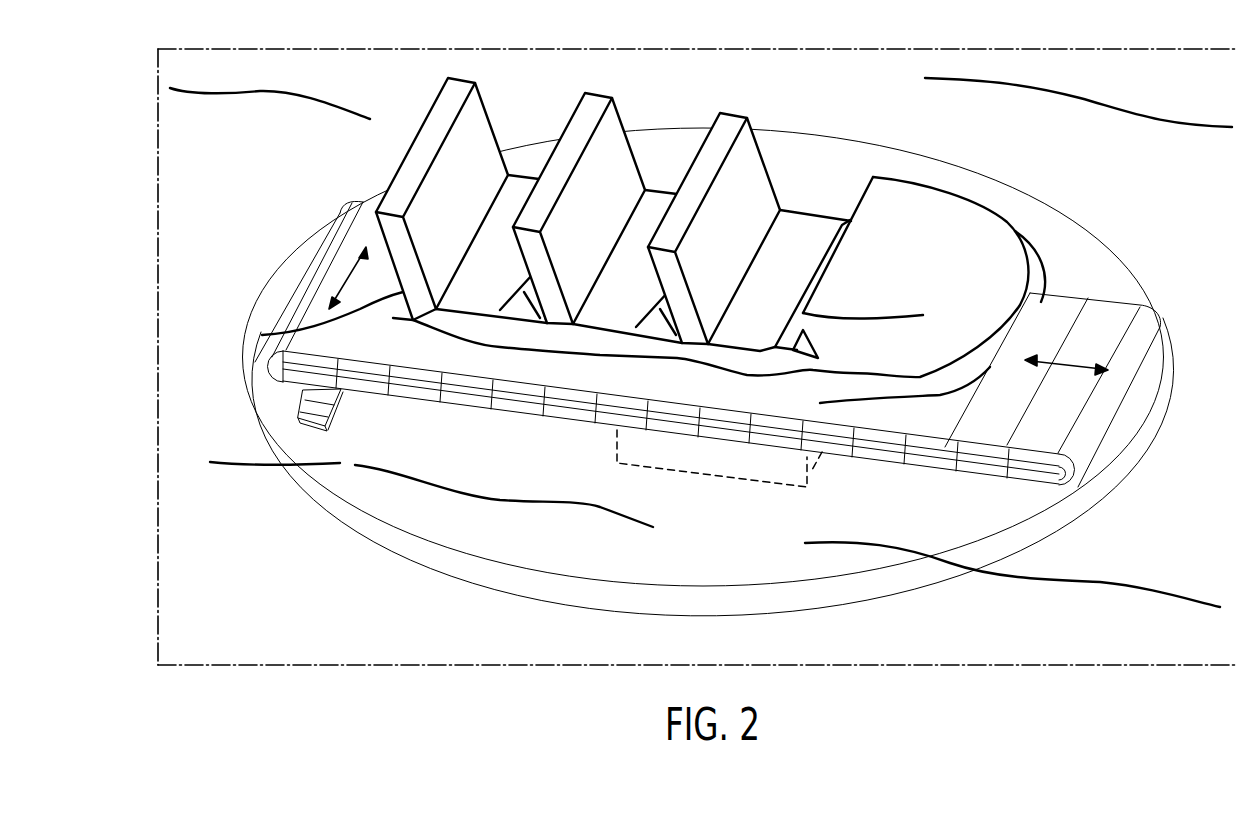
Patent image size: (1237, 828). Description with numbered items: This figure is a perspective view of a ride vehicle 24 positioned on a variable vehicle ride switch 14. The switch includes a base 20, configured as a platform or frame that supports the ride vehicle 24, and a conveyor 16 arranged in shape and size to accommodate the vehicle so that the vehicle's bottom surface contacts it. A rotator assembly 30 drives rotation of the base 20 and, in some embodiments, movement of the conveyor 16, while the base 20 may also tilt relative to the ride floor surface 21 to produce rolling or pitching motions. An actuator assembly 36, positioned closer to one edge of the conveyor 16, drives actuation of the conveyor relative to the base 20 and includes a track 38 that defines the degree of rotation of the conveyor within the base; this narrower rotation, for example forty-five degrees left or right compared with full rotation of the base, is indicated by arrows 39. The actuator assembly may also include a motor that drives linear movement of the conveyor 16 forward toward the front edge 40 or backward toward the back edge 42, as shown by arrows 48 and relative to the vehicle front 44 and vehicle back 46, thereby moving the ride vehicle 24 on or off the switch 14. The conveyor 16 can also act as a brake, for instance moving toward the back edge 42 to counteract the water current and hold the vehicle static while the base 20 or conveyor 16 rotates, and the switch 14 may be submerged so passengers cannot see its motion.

The variable vehicle ride switch 14 is at (247, 218).
The conveyor 16 is at (281, 366).
The base 20 is at (840, 597).
The ride floor surface 21 is at (233, 572).
The ride vehicle 24 is at (262, 334).
The rotator assembly 30 is at (748, 470).
The actuator assembly 36 is at (295, 420).
The track 38 is at (310, 418).
The arrows 39 is at (348, 276).
The front edge 40 is at (1146, 320).
The back edge 42 is at (327, 248).
The vehicle front 44 is at (911, 197).
The vehicle back 46 is at (443, 102).
The arrows 48 is at (1067, 368).